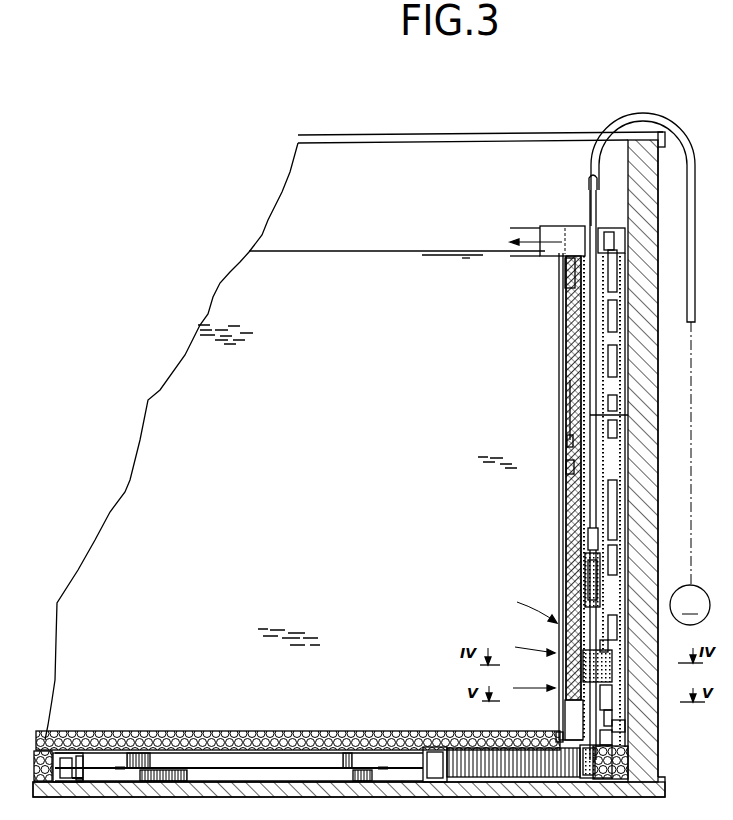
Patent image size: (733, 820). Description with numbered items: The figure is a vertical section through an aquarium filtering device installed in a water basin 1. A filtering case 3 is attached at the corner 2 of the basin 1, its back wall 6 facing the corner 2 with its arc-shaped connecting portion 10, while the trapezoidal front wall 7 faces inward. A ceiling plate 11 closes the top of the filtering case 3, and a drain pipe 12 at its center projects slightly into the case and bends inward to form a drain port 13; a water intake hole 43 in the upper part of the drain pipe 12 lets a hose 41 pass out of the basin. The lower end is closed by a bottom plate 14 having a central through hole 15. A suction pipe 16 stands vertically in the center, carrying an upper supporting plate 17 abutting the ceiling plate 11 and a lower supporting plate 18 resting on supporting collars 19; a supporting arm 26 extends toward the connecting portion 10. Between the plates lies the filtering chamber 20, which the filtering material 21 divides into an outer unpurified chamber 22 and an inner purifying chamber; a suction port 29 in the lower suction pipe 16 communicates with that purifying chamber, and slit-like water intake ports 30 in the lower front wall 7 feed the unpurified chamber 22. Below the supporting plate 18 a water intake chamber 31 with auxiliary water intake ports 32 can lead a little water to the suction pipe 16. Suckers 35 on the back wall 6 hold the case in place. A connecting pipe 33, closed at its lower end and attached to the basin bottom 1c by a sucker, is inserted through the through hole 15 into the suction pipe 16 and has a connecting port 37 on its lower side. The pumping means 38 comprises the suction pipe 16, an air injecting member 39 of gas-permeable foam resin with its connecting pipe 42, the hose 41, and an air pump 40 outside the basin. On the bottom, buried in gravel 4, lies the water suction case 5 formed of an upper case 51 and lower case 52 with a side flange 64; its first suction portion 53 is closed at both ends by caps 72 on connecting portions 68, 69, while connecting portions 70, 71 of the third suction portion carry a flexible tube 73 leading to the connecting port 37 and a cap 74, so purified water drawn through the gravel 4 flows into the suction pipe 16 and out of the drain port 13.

The basin 1 is at (668, 455).
The corner 2 is at (628, 172).
The filtering case 3 is at (560, 377).
The gravel 4 is at (277, 770).
The water suction case 5 is at (213, 715).
The back wall 6 is at (627, 433).
The front wall 7 is at (566, 356).
The connecting portion 10 is at (618, 389).
The ceiling plate 11 is at (565, 272).
The drain pipe 12 is at (558, 228).
The drain port 13 is at (542, 236).
The bottom plate 14 is at (573, 728).
The through hole 15 is at (607, 750).
The suction pipe 16 is at (568, 442).
The supporting plate 17 is at (570, 300).
The supporting plate 18 is at (612, 714).
The supporting collars 19 is at (617, 727).
The filtering chamber 20 is at (567, 467).
The filtering material 21 is at (568, 330).
The unpurified chamber 22 is at (570, 408).
The supporting arm 26 is at (615, 335).
The suction port 29 is at (610, 698).
The water intake ports 30 is at (560, 630).
The water intake chamber 31 is at (617, 734).
The auxiliary water intake ports 32 is at (556, 733).
The connecting pipe 33 is at (623, 676).
The suckers 35 is at (628, 300).
The connecting port 37 is at (630, 765).
The pumping means 38 is at (585, 556).
The air injecting member 39 is at (590, 580).
The air pump 40 is at (690, 605).
The hose 41 is at (600, 414).
The connecting pipe 42 is at (572, 540).
The water intake hole 43 is at (598, 229).
The upper case 51 is at (197, 760).
The lower case 52 is at (160, 770).
The first suction portion 53 is at (312, 762).
The flange 64 is at (120, 768).
The connecting portion 68 is at (404, 772).
The connecting portion 69 is at (70, 757).
The connecting portion 70 is at (383, 768).
The connecting portion 71 is at (82, 760).
The caps 72 is at (432, 750).
The flexible tube 73 is at (462, 760).
The cap 74 is at (45, 768).
The bottom 1c is at (345, 787).